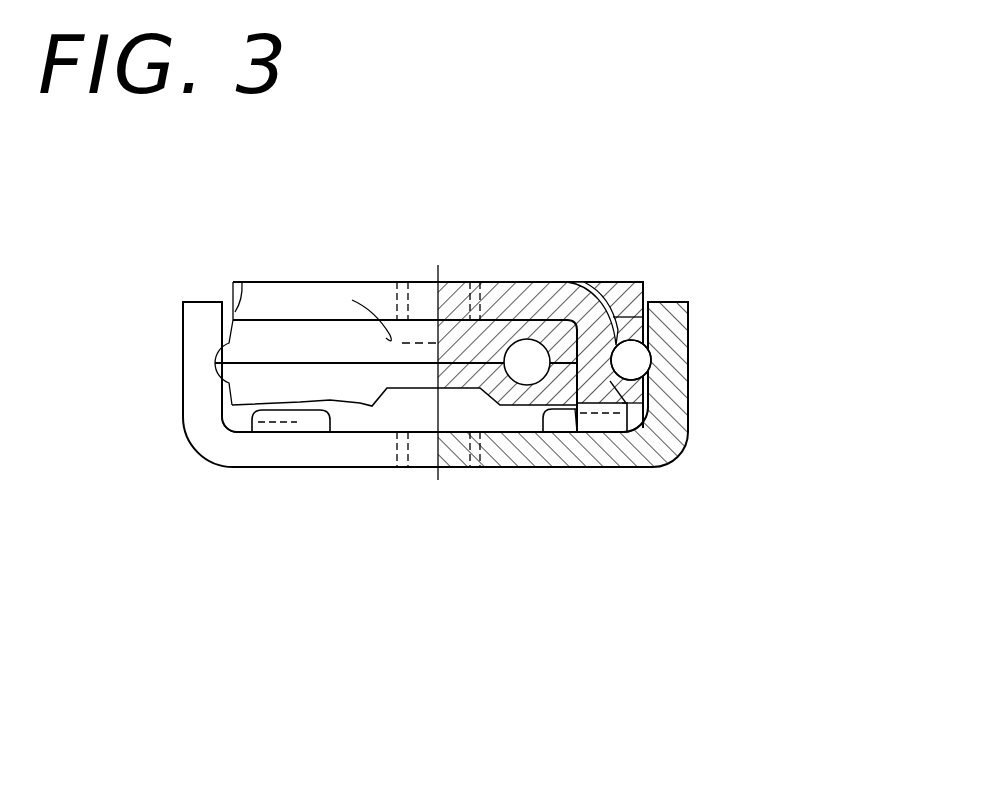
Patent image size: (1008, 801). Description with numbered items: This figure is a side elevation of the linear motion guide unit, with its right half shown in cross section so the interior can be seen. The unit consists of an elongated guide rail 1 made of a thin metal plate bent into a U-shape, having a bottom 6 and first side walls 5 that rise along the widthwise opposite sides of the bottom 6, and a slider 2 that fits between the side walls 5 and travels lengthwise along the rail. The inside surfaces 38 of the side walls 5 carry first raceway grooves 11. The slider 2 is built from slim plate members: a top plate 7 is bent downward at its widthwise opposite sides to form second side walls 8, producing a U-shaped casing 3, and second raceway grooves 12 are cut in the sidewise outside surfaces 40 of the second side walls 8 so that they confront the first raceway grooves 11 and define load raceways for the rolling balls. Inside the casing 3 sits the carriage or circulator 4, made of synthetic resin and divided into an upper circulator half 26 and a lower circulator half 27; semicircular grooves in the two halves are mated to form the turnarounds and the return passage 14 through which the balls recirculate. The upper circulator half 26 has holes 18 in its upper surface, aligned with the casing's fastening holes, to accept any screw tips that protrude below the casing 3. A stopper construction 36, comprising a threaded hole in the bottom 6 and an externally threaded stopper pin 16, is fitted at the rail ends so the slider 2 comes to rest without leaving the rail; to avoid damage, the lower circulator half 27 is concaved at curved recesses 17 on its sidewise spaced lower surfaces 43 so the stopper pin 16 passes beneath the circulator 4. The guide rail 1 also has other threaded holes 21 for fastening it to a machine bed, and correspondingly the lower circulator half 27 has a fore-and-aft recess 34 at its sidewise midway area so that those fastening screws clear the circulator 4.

The guide rail 1 is at (172, 299).
The slider 2 is at (495, 282).
The casing 3 is at (373, 297).
The carriage (circulator) 4 is at (378, 347).
The first side walls 5 is at (197, 347).
The bottom 6 is at (534, 440).
The top plate 7 is at (510, 292).
The second side walls 8 is at (675, 430).
The first raceway grooves 11 is at (650, 402).
The second raceway grooves 12 is at (648, 353).
The return passage 14 is at (634, 357).
The stopper pin 16 is at (309, 410).
The recesses (fore-and-aft areas) 17 is at (273, 425).
The holes 18 is at (348, 288).
The threaded holes 21 is at (460, 470).
The upper circulator half 26 is at (280, 332).
The lower circulator half 27 is at (252, 385).
The fore-and-aft recess 34 is at (420, 390).
The stopper construction 36 is at (587, 430).
The inside surfaces 38 is at (242, 282).
The sidewise outside surfaces 40 is at (628, 320).
The lower surfaces 43 is at (367, 400).